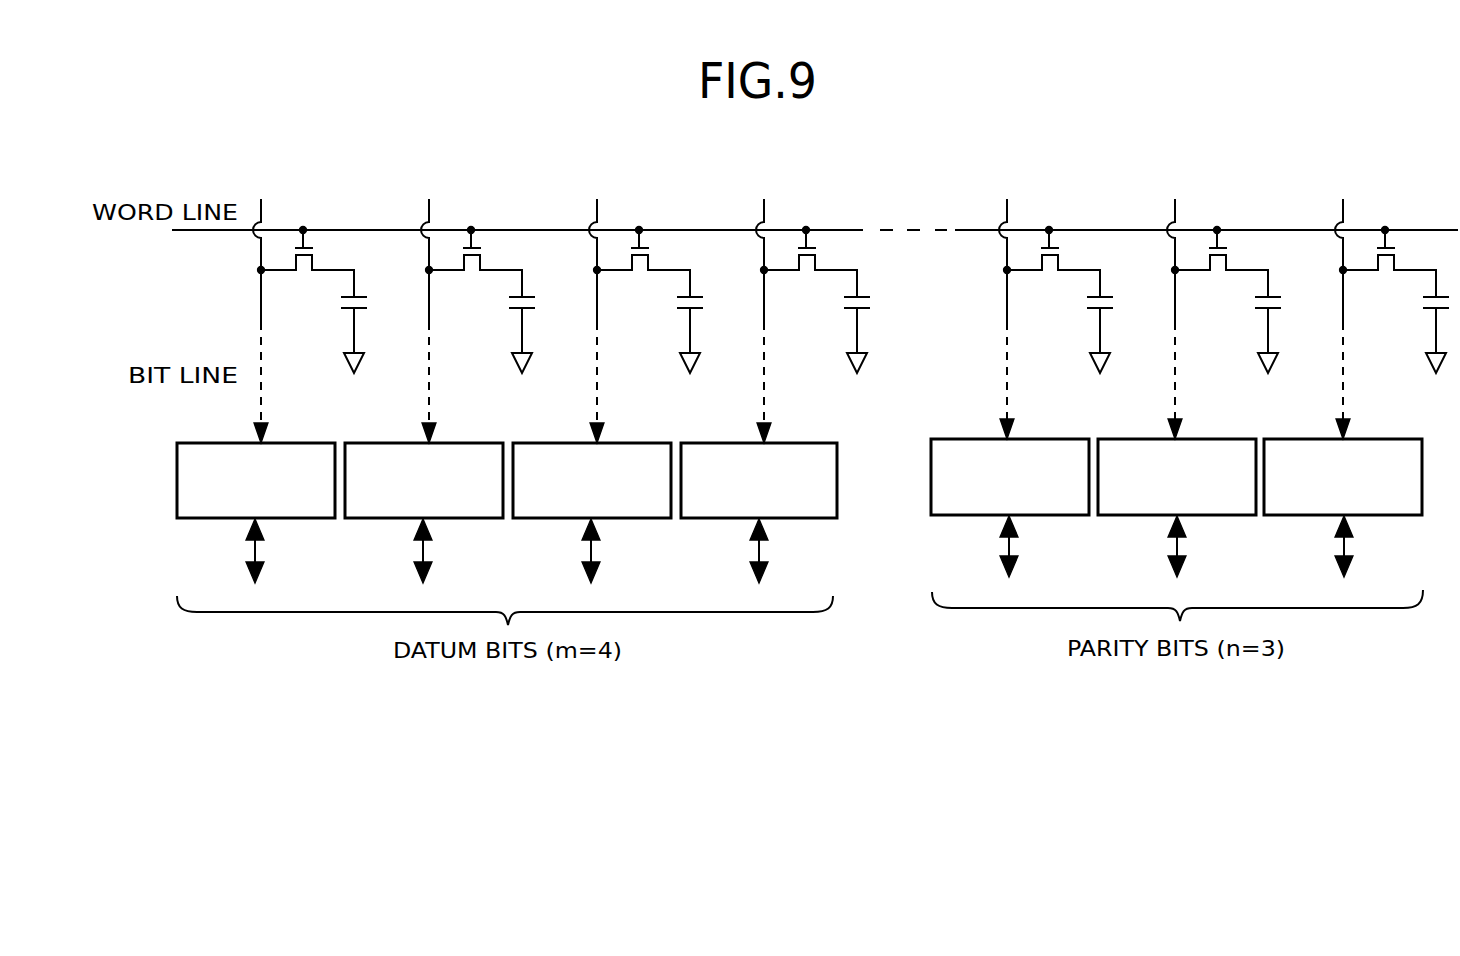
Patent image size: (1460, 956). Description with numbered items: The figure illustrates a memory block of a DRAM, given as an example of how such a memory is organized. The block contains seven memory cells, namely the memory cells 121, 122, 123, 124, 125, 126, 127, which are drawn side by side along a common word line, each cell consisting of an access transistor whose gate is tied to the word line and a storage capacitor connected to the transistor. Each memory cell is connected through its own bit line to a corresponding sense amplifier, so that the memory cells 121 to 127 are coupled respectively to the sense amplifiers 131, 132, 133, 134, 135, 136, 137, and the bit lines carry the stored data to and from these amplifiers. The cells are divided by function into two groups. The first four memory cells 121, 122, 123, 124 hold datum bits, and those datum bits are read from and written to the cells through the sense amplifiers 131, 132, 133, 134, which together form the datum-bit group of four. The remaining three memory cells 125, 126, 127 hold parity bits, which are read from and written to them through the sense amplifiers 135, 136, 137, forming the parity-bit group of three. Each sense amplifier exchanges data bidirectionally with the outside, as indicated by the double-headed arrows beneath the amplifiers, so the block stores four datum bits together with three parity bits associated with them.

The memory cell 121 is at (309, 315).
The memory cell 122 is at (477, 315).
The memory cell 123 is at (645, 315).
The memory cell 124 is at (812, 315).
The memory cell 125 is at (1055, 315).
The memory cell 126 is at (1223, 315).
The memory cell 127 is at (1391, 315).
The sense amplifier 131 is at (308, 443).
The sense amplifier 132 is at (476, 443).
The sense amplifier 133 is at (644, 443).
The sense amplifier 134 is at (811, 443).
The sense amplifier 135 is at (1059, 439).
The sense amplifier 136 is at (1226, 439).
The sense amplifier 137 is at (1394, 439).